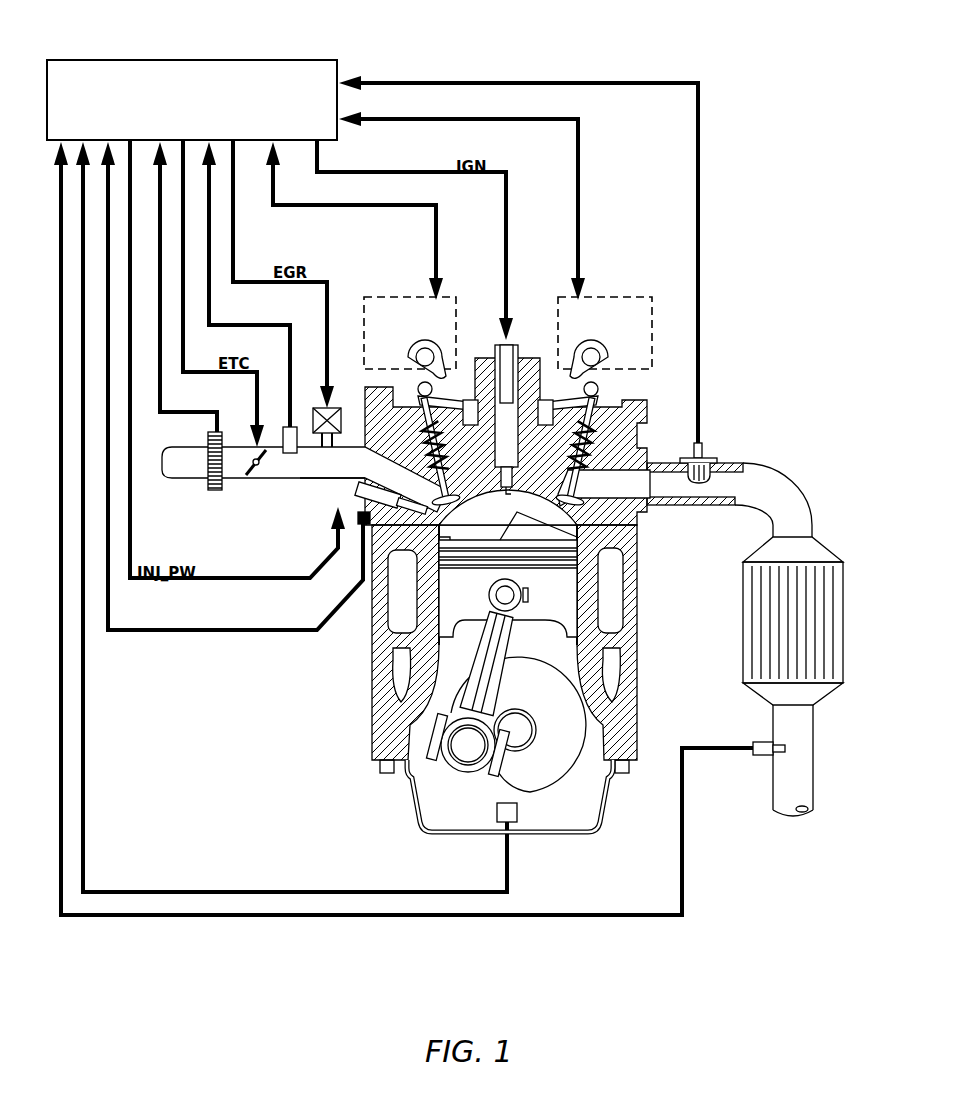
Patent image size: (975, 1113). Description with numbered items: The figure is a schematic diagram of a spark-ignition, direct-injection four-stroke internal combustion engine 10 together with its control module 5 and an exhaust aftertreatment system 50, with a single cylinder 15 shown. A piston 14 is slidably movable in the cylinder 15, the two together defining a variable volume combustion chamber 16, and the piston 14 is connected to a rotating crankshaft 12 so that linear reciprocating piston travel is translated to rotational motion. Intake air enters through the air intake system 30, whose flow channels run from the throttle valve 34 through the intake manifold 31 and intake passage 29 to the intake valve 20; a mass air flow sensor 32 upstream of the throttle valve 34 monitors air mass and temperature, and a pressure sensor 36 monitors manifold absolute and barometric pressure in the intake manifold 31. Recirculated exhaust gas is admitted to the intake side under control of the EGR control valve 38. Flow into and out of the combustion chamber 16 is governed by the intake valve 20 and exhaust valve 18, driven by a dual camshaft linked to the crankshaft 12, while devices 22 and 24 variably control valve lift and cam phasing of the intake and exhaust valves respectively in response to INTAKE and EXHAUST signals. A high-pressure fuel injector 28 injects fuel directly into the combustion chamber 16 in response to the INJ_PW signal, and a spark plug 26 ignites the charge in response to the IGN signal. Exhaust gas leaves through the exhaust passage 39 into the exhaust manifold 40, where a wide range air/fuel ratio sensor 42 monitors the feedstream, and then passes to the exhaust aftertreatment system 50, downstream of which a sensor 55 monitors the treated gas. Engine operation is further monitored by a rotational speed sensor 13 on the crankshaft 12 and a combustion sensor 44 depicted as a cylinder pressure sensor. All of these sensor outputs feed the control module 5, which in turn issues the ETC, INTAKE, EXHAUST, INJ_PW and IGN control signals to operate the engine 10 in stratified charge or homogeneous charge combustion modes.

The control module 5 is at (300, 62).
The internal combustion engine 10 is at (630, 645).
The crankshaft 12 is at (555, 775).
The rotational speed sensor 13 is at (495, 815).
The piston 14 is at (558, 606).
The cylinder 15 is at (590, 590).
The combustion chamber 16 is at (486, 529).
The exhaust valve 18 is at (572, 496).
The intake valve 20 is at (440, 474).
The intake valve control device 22 is at (452, 298).
The exhaust valve control device 24 is at (640, 350).
The spark plug 26 is at (521, 338).
The fuel injector 28 is at (343, 490).
The intake passage 29 is at (362, 450).
The air intake system 30 is at (285, 480).
The intake manifold 31 is at (281, 482).
The mass air flow sensor 32 is at (215, 492).
The throttle valve 34 is at (245, 472).
The pressure sensor 36 is at (287, 455).
The EGR control valve 38 is at (323, 437).
The exhaust passage 39 is at (640, 482).
The exhaust manifold 40 is at (684, 502).
The wide range air/fuel ratio sensor 42 is at (704, 452).
The combustion sensor 44 is at (355, 583).
The exhaust aftertreatment system 50 is at (852, 593).
The sensor 55 is at (760, 758).